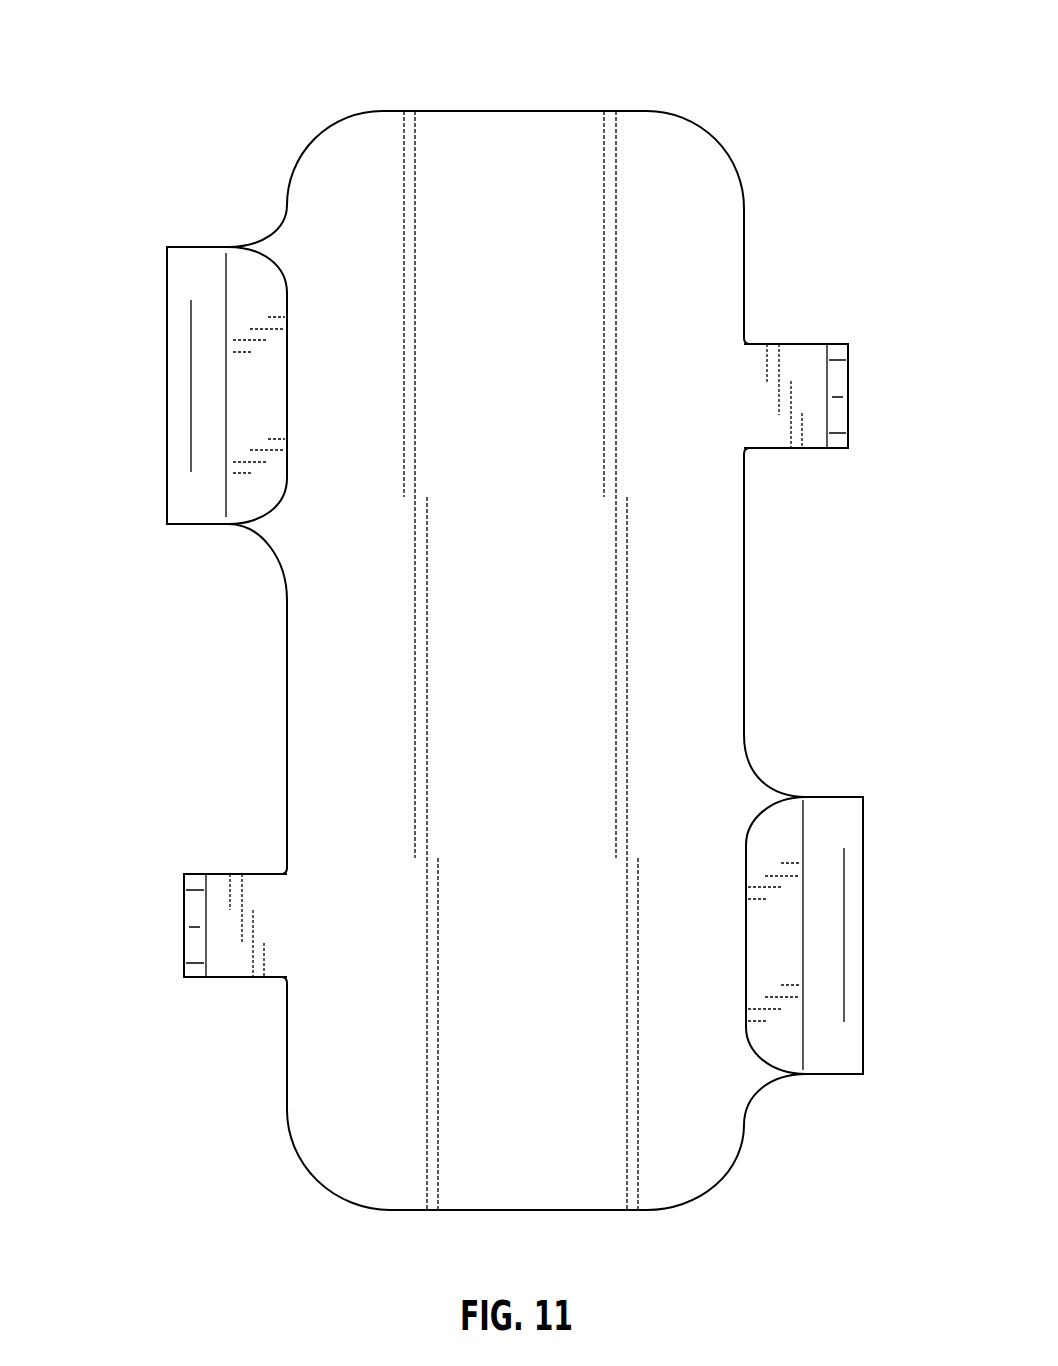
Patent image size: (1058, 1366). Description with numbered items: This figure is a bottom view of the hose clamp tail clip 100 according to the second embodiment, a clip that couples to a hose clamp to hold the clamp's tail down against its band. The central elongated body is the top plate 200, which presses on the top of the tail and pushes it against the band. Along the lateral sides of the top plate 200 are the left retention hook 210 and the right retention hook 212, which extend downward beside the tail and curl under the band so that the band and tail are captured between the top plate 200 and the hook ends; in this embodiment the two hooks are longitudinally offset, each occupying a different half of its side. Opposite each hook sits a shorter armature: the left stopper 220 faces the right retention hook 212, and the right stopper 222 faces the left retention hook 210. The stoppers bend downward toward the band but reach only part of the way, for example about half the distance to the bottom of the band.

The hose clamp tail clip 100 is at (108, 98).
The top plate 200 is at (707, 137).
The left retention hook 210 is at (853, 1047).
The right retention hook 212 is at (167, 294).
The left stopper 220 is at (850, 415).
The right stopper 222 is at (183, 938).